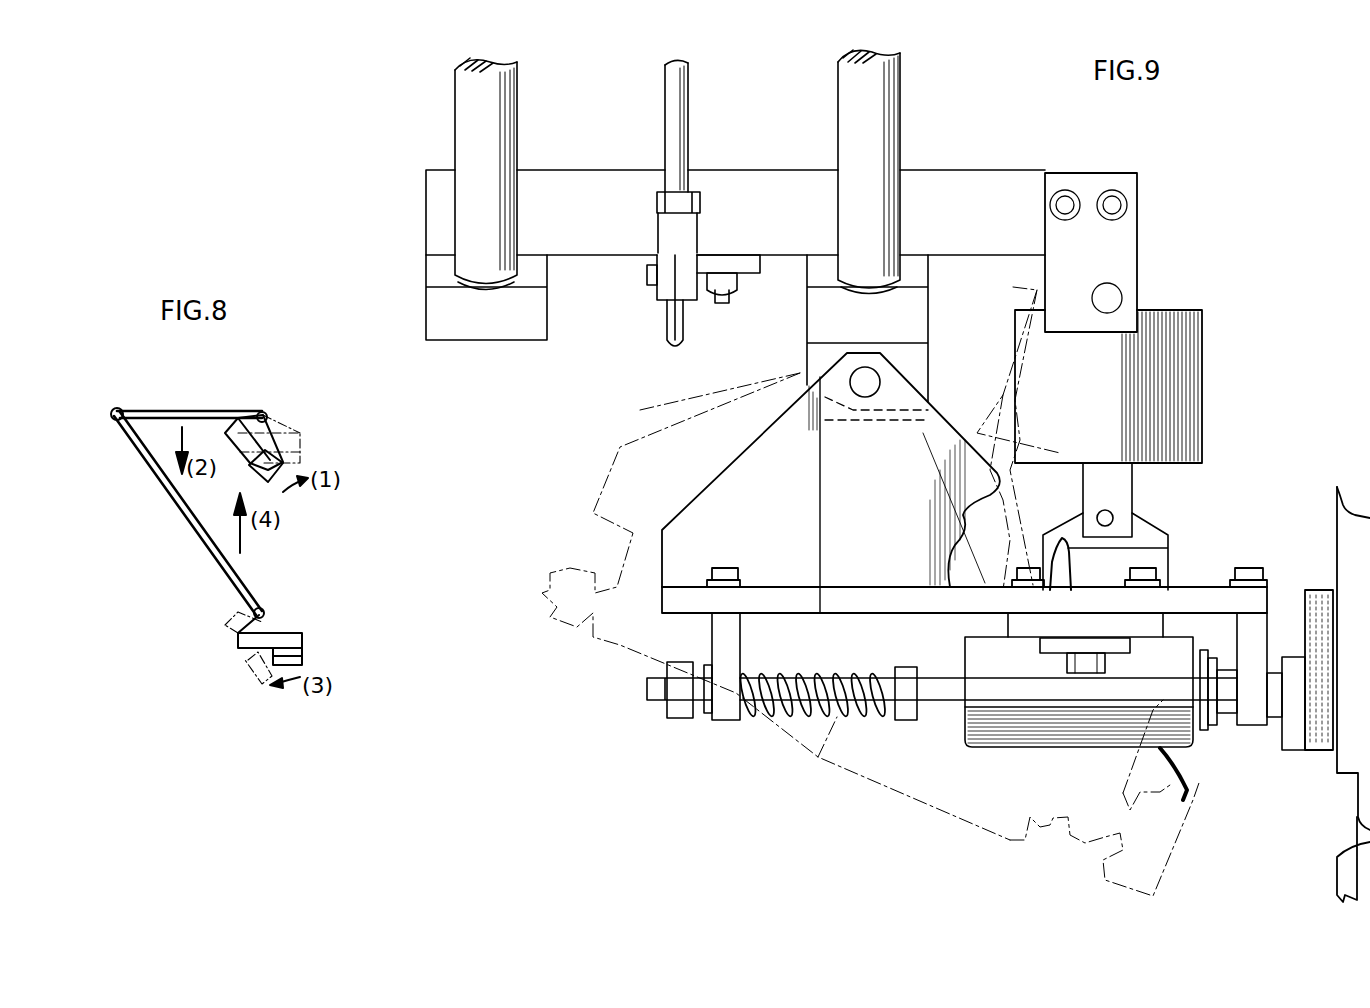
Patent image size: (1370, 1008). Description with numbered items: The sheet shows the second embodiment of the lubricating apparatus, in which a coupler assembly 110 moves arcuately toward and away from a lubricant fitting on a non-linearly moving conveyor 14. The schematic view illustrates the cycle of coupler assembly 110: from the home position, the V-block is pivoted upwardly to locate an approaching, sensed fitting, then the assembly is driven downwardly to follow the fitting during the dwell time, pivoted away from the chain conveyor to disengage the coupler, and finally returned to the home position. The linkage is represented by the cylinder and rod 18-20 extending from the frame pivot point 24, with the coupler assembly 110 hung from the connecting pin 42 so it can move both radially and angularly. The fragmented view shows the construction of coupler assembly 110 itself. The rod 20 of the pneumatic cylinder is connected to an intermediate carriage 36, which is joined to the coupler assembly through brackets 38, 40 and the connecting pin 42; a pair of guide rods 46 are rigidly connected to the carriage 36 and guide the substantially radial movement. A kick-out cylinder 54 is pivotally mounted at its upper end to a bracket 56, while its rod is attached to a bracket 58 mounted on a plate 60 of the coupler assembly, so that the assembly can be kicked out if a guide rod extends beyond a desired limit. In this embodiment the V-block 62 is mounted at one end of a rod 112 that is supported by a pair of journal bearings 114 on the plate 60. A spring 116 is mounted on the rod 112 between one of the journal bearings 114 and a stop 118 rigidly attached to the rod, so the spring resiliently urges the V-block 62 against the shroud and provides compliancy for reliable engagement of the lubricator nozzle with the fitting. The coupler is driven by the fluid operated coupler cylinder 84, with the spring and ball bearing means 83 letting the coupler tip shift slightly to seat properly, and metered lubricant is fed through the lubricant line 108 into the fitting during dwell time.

In FIG. 9, the conveyor 14 is at (1337, 517).
In FIG. 8, the cylinder and rod 18-20 is at (210, 378).
In FIG. 9, the rod 20 is at (672, 103).
In FIG. 8, the frame pivot point 24 is at (113, 409).
In FIG. 9, the carriage 36 is at (745, 178).
In FIG. 9, the bracket 38 is at (928, 362).
In FIG. 9, the bracket 40 is at (812, 445).
In FIG. 8, the connecting pin 42 is at (268, 413).
In FIG. 9, the connecting pin 42 is at (850, 377).
In FIG. 9, the guide rods 46 is at (468, 102).
In FIG. 9, the kick-out cylinder 54 is at (1200, 333).
In FIG. 9, the bracket 56 is at (1130, 252).
In FIG. 9, the bracket 58 is at (1145, 538).
In FIG. 9, the plate 60 is at (765, 598).
In FIG. 9, the V-block 62 is at (1294, 742).
In FIG. 9, the spring and ball bearing means 83 is at (1213, 737).
In FIG. 9, the coupler cylinder 84 is at (1005, 732).
In FIG. 9, the lubricant line 108 is at (1192, 798).
In FIG. 8, the coupler assembly 110 is at (297, 424).
In FIG. 9, the coupler assembly 110 is at (1250, 455).
In FIG. 9, the rod 112 is at (940, 700).
In FIG. 9, the journal bearings 114 is at (738, 628).
In FIG. 9, the spring 116 is at (820, 676).
In FIG. 9, the stop 118 is at (905, 670).